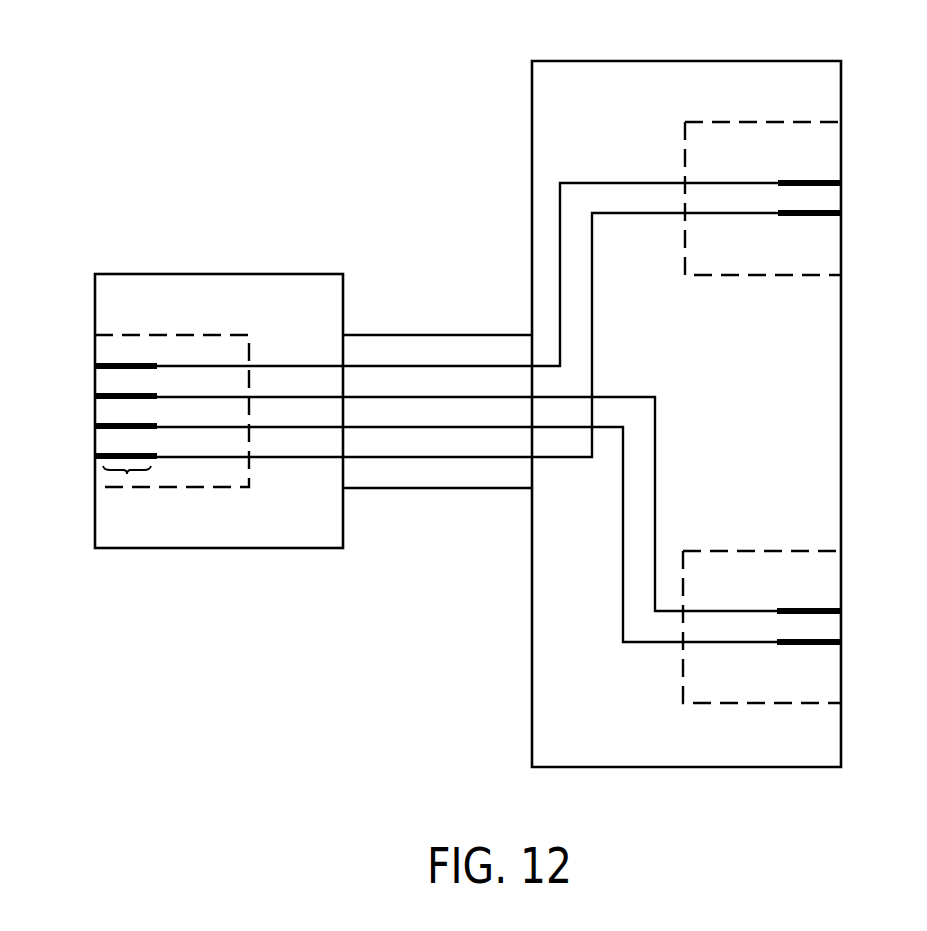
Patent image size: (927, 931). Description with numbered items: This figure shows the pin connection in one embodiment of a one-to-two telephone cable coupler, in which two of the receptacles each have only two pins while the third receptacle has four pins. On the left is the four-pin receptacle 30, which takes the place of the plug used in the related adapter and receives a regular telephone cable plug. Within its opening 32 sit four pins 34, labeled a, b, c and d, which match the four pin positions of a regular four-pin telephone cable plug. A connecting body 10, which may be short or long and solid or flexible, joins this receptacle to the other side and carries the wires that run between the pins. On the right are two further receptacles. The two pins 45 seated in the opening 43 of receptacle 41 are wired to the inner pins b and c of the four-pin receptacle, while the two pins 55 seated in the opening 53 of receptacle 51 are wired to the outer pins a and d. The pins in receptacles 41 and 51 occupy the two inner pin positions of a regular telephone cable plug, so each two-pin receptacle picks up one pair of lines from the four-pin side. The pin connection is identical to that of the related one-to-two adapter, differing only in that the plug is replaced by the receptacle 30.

The connecting body 10 is at (440, 475).
The receptacle 30 is at (218, 288).
The opening 32 is at (121, 345).
The outer pin a is at (89, 366).
The inner pin b is at (89, 396).
The inner pin c is at (89, 426).
The outer pin d is at (89, 456).
The pins 34 is at (127, 478).
The receptacle 41 is at (742, 758).
The opening 43 is at (803, 695).
The pins 45 is at (808, 610).
The receptacle 51 is at (745, 68).
The opening 53 is at (808, 128).
The pins 55 is at (802, 180).